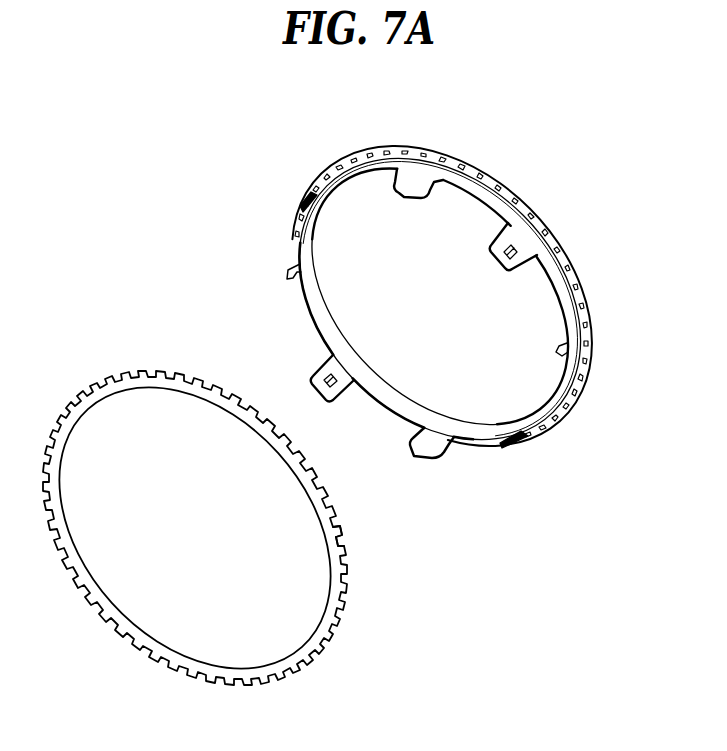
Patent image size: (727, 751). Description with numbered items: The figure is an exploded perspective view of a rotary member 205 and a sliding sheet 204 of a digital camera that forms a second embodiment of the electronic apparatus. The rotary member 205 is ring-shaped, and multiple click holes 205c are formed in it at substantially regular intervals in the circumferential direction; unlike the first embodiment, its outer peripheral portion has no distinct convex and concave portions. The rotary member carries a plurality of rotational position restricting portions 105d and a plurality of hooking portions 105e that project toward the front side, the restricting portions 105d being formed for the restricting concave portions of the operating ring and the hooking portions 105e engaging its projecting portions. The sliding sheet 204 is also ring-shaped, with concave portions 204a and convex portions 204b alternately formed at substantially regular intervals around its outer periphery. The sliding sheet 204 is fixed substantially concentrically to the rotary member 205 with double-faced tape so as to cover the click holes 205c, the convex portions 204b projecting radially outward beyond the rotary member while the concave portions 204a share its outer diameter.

The sliding sheet 204 is at (333, 633).
The concave portions 204a is at (342, 533).
The convex portions 204b is at (347, 545).
The rotary member 205 is at (313, 192).
The click holes 205c is at (580, 290).
The rotational position restricting portions 105d is at (424, 178).
The hooking portions 105e is at (317, 200).